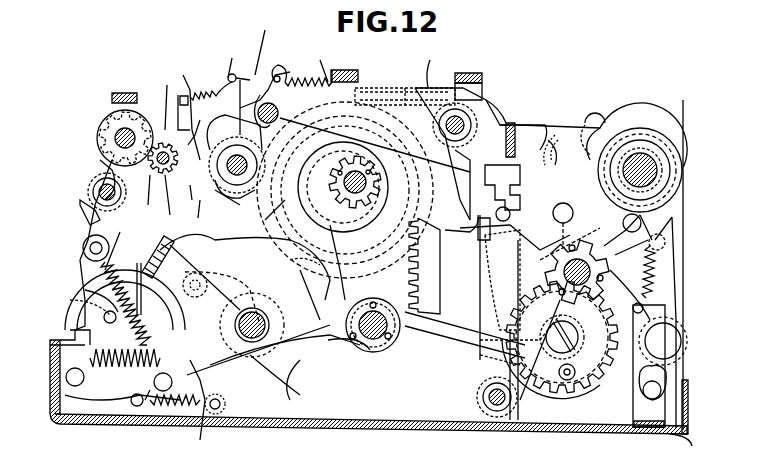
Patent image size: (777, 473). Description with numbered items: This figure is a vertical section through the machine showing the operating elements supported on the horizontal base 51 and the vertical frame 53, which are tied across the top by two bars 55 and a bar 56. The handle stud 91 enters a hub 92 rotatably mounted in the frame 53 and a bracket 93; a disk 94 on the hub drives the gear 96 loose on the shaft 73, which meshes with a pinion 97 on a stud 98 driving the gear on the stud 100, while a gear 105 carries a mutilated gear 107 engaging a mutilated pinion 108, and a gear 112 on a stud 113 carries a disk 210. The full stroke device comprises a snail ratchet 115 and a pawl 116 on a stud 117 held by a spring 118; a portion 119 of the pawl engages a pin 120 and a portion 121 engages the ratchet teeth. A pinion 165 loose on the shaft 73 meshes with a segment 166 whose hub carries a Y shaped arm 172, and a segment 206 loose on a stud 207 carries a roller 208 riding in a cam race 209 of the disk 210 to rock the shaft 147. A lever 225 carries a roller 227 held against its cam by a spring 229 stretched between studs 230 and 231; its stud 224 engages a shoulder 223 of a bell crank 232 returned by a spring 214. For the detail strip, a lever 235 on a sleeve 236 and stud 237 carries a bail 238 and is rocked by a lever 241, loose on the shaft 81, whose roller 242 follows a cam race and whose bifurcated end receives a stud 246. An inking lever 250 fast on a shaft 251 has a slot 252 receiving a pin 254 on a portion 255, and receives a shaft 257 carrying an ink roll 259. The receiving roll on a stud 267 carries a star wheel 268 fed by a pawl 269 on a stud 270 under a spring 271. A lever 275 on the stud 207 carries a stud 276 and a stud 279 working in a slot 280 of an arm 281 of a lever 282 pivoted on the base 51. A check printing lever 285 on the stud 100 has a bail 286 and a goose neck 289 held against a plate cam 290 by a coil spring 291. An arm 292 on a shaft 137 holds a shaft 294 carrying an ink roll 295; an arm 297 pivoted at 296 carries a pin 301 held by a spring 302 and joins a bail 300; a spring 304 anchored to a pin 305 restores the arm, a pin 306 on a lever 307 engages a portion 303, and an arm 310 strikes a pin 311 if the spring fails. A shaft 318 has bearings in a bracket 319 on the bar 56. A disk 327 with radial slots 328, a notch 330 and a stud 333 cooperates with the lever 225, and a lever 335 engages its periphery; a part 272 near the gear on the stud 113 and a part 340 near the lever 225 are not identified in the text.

The horizontal base 51 is at (404, 430).
The vertical frame 53 is at (75, 313).
The bars 55 is at (466, 73).
The bar 56 is at (125, 93).
The shaft 73 is at (330, 182).
The shaft 81 is at (237, 156).
The stud 91 is at (472, 186).
The hub 92 is at (502, 187).
The bracket 93 is at (436, 66).
The disk 94 is at (510, 122).
The gear 96 is at (267, 215).
The pinion 97 is at (345, 280).
The stud 98 is at (322, 295).
The stud 100 is at (256, 325).
The gear 105 is at (178, 98).
The mutilated gear 107 is at (177, 202).
The mutilated pinion 108 is at (100, 136).
The gear 112 is at (517, 379).
The stud 113 is at (578, 340).
The snail ratchet 115 is at (492, 100).
The pawl 116 is at (583, 165).
The stud 117 is at (560, 249).
The spring 118 is at (604, 150).
The portion of pawl 119 is at (505, 208).
The pin 120 is at (457, 218).
The portion of pawl 121 is at (548, 125).
The shaft 137 is at (270, 100).
The shaft 147 is at (375, 346).
The pinion 165 is at (345, 190).
The segment 166 is at (420, 296).
The Y shaped arm 172 is at (340, 348).
The segment 206 is at (356, 343).
The stud 207 is at (672, 338).
The anti-friction roller 208 is at (540, 340).
The cam race 209 is at (530, 320).
The disk 210 is at (595, 398).
The coiled spring 214 is at (160, 395).
The shoulder 223 is at (226, 405).
The stud 224 is at (200, 440).
The lever 225 is at (325, 360).
The anti-friction roller 227 is at (279, 383).
The spring 229 is at (120, 245).
The stud 230 is at (165, 405).
The stud 231 is at (83, 248).
The bell crank 232 is at (221, 298).
The lever 235 is at (660, 142).
The sleeve 236 is at (676, 146).
The stud 237 is at (681, 156).
The bail 238 is at (532, 120).
The lever 241 is at (302, 70).
The anti-friction roller 242 is at (358, 100).
The stud 246 is at (565, 140).
The lever 250 is at (492, 285).
The shaft 251 is at (480, 402).
The slot 252 is at (500, 272).
The pin 254 is at (490, 246).
The portion 255 is at (500, 258).
The shaft 257 is at (446, 154).
The roll 259 is at (452, 112).
The stud 267 is at (625, 285).
The star wheel 268 is at (655, 272).
The pawl 269 is at (665, 245).
The stud 270 is at (622, 232).
The spring 271 is at (656, 262).
The pin 272 is at (558, 372).
The lever 275 is at (678, 300).
The stud 276 is at (684, 190).
The stud 279 is at (666, 380).
The slot 280 is at (661, 392).
The arm 281 is at (660, 416).
The lever 282 is at (693, 443).
The lever 285 is at (208, 272).
The bail 286 is at (168, 257).
The goose neck portion 289 is at (290, 246).
The plate cam 290 is at (306, 269).
The coil spring 291 is at (50, 345).
The arm 292 is at (264, 45).
The shaft 294 is at (169, 175).
The roll 295 is at (184, 110).
The pivot 296 is at (209, 124).
The arm 297 is at (200, 92).
The bail 300 is at (161, 196).
The pin 301 is at (164, 102).
The spring 302 is at (236, 62).
The portion 303 is at (236, 202).
The spring 304 is at (330, 63).
The pin 305 is at (412, 92).
The pin 306 is at (258, 90).
The lever 307 is at (205, 196).
The arm 310 is at (206, 214).
The pin 311 is at (245, 106).
The shaft 318 is at (92, 187).
The bracket 319 is at (100, 160).
The disk 327 is at (70, 300).
The radial slots 328 is at (128, 262).
The notch 330 is at (70, 330).
The stud 333 is at (85, 290).
The lever 335 is at (105, 400).
The spring 340 is at (129, 315).